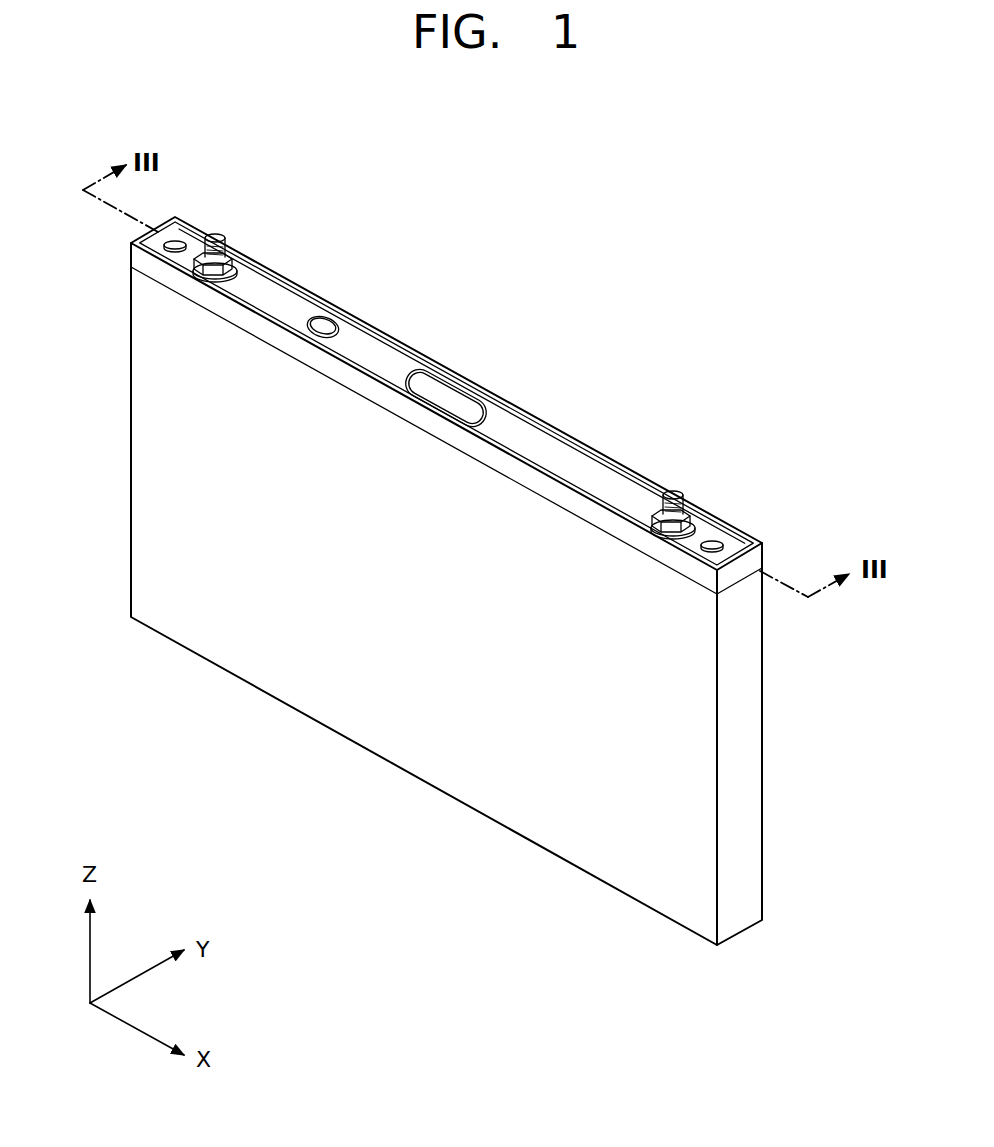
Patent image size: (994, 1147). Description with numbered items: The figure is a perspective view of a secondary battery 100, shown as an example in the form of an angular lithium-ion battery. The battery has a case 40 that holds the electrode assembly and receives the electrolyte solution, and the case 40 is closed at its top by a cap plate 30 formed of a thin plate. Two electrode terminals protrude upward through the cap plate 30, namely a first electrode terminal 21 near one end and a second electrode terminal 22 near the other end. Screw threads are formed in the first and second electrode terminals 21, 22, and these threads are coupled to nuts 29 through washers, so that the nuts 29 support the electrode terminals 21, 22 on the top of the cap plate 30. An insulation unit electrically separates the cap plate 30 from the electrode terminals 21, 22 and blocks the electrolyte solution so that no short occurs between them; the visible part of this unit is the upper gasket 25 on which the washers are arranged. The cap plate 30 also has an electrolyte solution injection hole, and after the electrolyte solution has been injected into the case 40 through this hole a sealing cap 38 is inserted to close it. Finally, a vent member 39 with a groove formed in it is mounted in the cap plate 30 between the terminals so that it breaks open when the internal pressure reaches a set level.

The secondary battery 100 is at (637, 362).
The case 40 is at (413, 747).
The cap plate 30 is at (373, 355).
The first electrode terminal 21 is at (217, 233).
The second electrode terminal 22 is at (677, 488).
The nut 29 is at (688, 513).
The upper gasket 25 is at (700, 522).
The sealing cap 38 is at (325, 325).
The vent member 39 is at (452, 395).